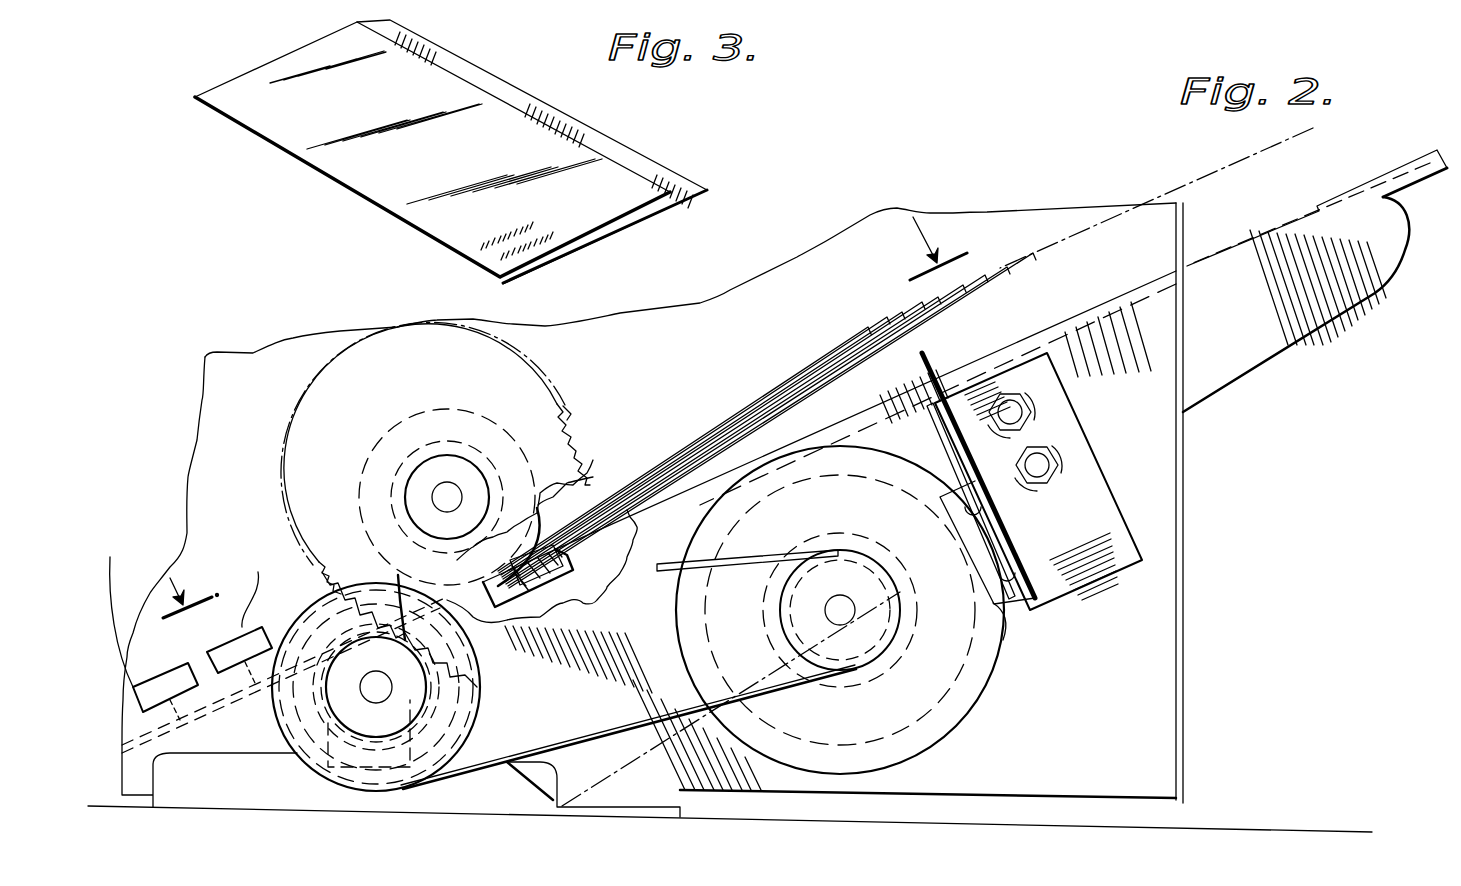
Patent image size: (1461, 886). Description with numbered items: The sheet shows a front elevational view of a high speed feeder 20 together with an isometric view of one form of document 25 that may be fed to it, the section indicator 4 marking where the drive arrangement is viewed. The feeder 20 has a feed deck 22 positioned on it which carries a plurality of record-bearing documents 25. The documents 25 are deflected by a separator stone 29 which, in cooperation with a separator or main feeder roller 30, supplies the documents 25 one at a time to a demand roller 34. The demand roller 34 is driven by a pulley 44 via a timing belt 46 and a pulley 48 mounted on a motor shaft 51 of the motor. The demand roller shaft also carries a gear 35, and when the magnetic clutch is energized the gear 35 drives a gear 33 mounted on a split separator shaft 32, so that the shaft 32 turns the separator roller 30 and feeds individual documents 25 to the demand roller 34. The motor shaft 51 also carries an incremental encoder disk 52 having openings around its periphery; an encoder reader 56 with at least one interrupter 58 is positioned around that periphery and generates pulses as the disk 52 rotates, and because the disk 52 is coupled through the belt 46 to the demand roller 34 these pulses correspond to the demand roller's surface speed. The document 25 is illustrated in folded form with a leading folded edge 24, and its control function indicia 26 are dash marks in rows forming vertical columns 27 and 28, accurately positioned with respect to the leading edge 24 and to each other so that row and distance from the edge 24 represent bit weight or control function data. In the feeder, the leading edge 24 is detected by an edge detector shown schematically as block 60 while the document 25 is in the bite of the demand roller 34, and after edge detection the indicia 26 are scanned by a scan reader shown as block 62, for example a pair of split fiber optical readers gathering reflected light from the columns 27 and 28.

In FIG. 2, the section line indicator 4 is at (565, 417).
In FIG. 2, the high speed feeder 20 is at (1205, 517).
In FIG. 2, the feed deck 22 is at (1387, 165).
In FIG. 3, the leading folded edge 24 is at (323, 168).
In FIG. 3, the document 25 is at (577, 147).
In FIG. 2, the document 25 is at (757, 395).
In FIG. 3, the control function indicia 26 is at (500, 230).
In FIG. 3, the vertical column 27 is at (530, 227).
In FIG. 3, the vertical column 28 is at (550, 235).
In FIG. 2, the separator stone 29 is at (548, 591).
In FIG. 2, the separator roller 30 is at (545, 510).
In FIG. 2, the separator shaft 32 is at (450, 488).
In FIG. 2, the gear 33 is at (577, 430).
In FIG. 2, the demand roller 34 is at (353, 727).
In FIG. 2, the gear 35 is at (462, 656).
In FIG. 2, the pulley 44 is at (393, 790).
In FIG. 2, the timing belt 46 is at (670, 565).
In FIG. 2, the pulley 48 is at (880, 655).
In FIG. 2, the motor shaft 51 is at (845, 582).
In FIG. 2, the incremental encoder disk 52 is at (965, 718).
In FIG. 2, the encoder reader 56 is at (1043, 570).
In FIG. 2, the interrupter 58 is at (1005, 637).
In FIG. 2, the edge detector 60 is at (217, 647).
In FIG. 2, the scan reader 62 is at (170, 672).